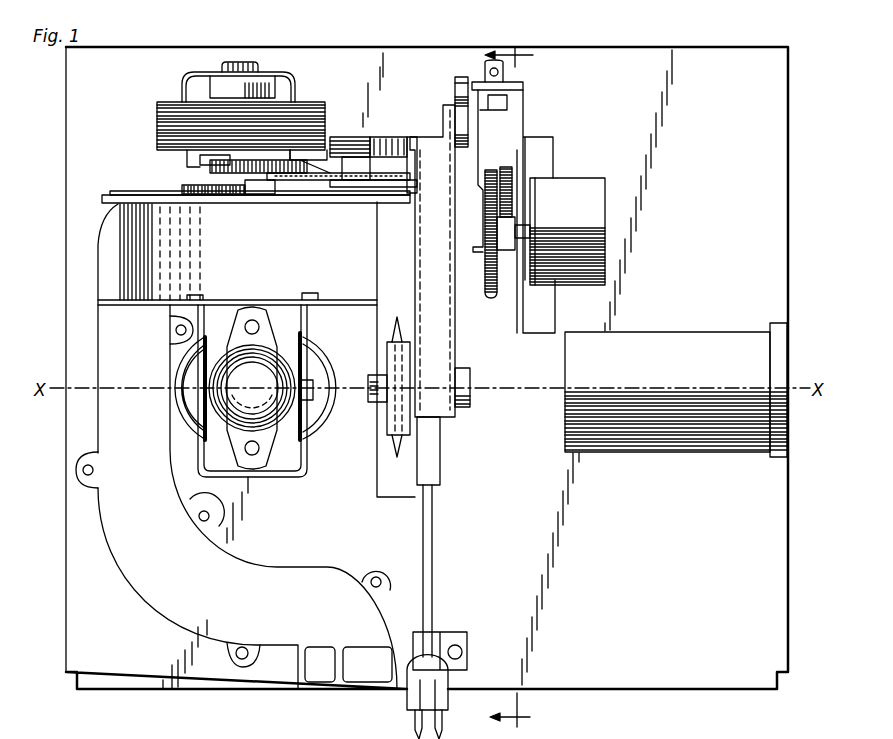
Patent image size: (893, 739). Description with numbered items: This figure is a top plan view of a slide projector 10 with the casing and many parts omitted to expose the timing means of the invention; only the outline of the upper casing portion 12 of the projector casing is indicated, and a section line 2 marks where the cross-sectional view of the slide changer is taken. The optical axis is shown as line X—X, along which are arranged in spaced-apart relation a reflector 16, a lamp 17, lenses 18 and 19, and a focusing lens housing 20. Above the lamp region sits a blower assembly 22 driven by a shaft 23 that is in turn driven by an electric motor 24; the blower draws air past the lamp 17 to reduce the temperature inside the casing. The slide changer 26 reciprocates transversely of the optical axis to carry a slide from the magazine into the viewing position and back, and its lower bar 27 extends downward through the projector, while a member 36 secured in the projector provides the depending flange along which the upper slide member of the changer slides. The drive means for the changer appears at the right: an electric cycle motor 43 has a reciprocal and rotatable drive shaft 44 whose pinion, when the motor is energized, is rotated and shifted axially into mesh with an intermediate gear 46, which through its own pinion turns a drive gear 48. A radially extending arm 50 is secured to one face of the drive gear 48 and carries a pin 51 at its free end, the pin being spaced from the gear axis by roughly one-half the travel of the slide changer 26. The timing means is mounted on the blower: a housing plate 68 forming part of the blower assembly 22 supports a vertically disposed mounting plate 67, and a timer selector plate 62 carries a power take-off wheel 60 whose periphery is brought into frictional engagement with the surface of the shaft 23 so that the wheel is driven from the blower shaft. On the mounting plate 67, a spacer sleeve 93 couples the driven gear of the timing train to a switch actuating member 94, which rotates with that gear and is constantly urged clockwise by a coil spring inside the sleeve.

The section line 2— 2 is at (516, 387).
The projector 10 is at (62, 212).
The upper casing portion 12 is at (427, 393).
The reflector 16 is at (178, 373).
The lamp 17 is at (240, 398).
The lens 18 is at (317, 430).
The lens 19 is at (393, 328).
The focusing lens housing 20 is at (648, 452).
The blower assembly 22 is at (140, 242).
The shaft 23 is at (200, 171).
The electric motor 24 is at (163, 113).
The slide changer 26 is at (443, 488).
The lower bar 27 is at (430, 580).
The member 36 is at (443, 348).
The electric cycle motor 43 is at (598, 238).
The drive shaft 44 is at (528, 232).
The intermediate gear 46 is at (510, 172).
The drive gear 48 is at (492, 298).
The radially extending arm 50 is at (513, 196).
The pin 51 is at (458, 98).
The power take-off wheel 60 is at (182, 188).
The timer selector plate 62 is at (213, 163).
The mounting plate 67 is at (133, 195).
The housing plate 68 is at (113, 200).
The spacer sleeve 93 is at (337, 158).
The switch actuating member 94 is at (340, 138).